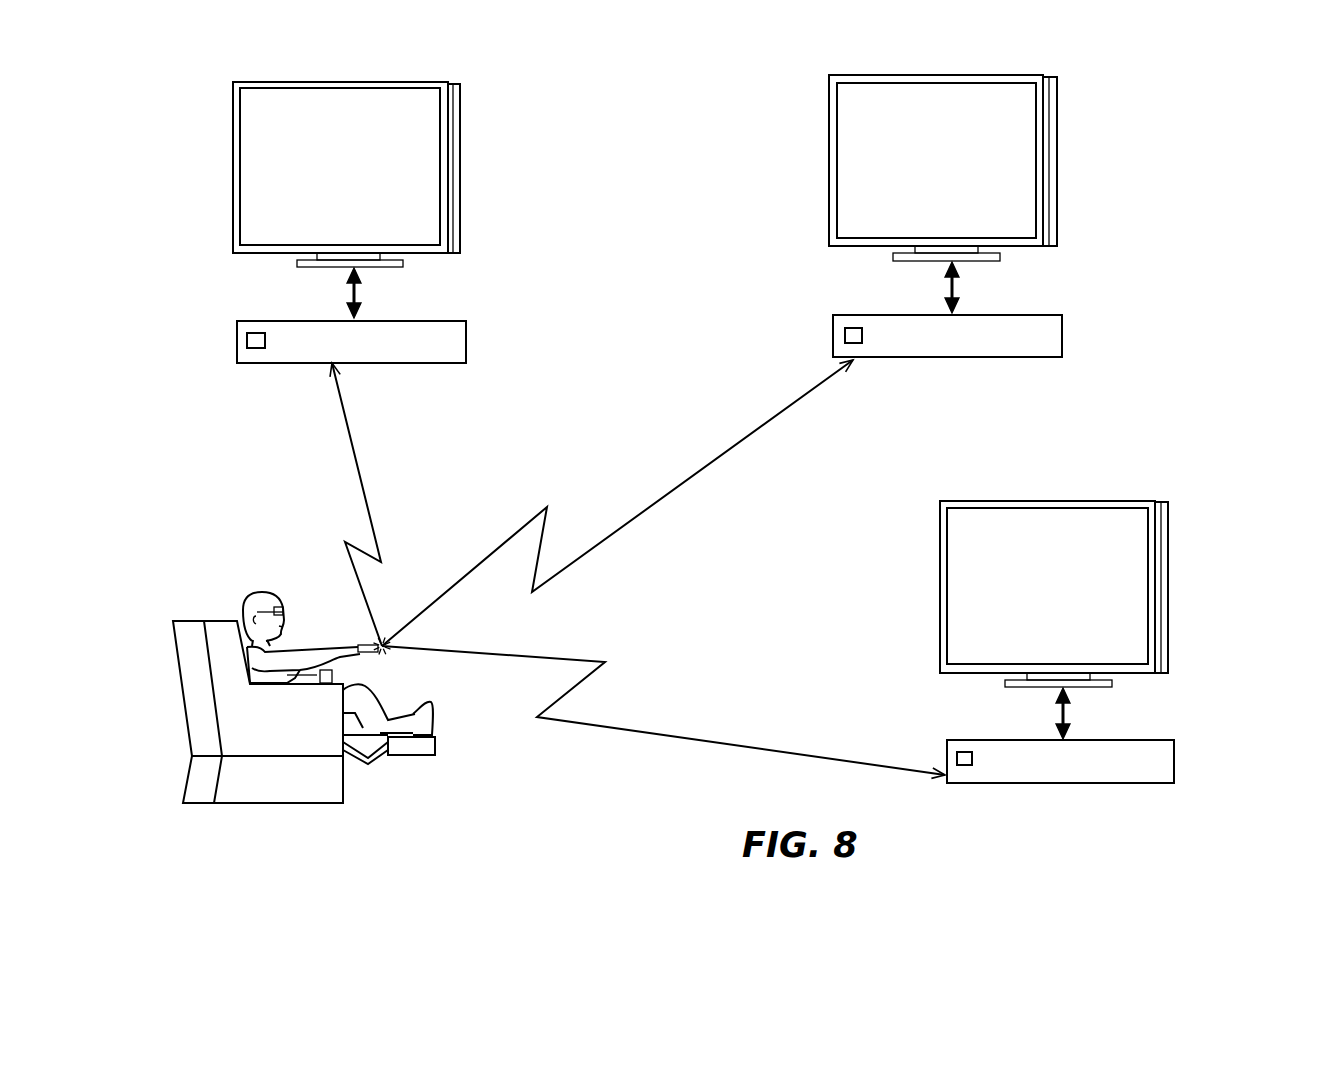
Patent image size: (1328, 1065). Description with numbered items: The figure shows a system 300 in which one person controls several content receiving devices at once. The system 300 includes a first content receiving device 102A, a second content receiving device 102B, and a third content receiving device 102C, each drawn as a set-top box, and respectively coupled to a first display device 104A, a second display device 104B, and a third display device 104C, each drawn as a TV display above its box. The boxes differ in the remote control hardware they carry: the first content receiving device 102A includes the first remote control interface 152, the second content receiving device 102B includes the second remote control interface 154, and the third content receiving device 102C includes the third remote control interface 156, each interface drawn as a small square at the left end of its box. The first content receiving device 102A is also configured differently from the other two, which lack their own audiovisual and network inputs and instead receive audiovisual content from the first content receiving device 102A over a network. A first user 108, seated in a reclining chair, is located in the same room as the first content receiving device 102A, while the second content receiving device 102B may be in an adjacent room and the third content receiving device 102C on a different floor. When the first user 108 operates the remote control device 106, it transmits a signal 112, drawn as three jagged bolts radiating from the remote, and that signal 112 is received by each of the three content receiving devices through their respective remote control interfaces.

The system 300 is at (1210, 92).
The first display device 104A is at (1170, 577).
The second display device 104B is at (462, 158).
The third display device 104C is at (1058, 150).
The first content receiving device 102A is at (1176, 765).
The second content receiving device 102B is at (468, 347).
The third content receiving device 102C is at (1064, 340).
The first remote control interface 152 is at (948, 755).
The second remote control interface 154 is at (240, 337).
The third remote control interface 156 is at (835, 330).
The signal 112 is at (355, 448).
The remote control device 106 is at (387, 648).
The first user 108 is at (247, 598).